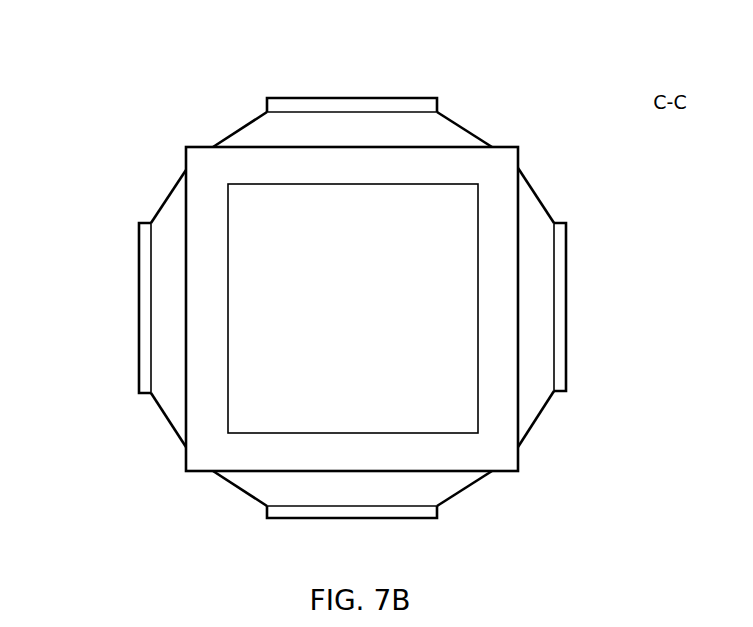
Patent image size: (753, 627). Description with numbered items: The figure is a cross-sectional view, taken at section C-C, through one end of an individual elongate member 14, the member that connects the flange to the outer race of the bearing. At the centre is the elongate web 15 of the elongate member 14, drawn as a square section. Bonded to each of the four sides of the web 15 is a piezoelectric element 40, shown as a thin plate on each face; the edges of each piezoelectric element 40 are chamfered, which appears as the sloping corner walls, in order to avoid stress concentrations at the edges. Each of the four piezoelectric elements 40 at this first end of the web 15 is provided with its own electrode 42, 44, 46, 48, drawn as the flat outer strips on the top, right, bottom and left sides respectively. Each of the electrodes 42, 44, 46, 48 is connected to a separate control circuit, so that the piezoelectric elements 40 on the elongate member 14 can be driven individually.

The elongate member 14 is at (143, 134).
The elongate web 15 is at (500, 160).
The piezoelectric element 40 is at (177, 222).
The electrode 42 is at (351, 98).
The electrode 44 is at (568, 265).
The electrode 46 is at (343, 518).
The electrode 48 is at (137, 305).